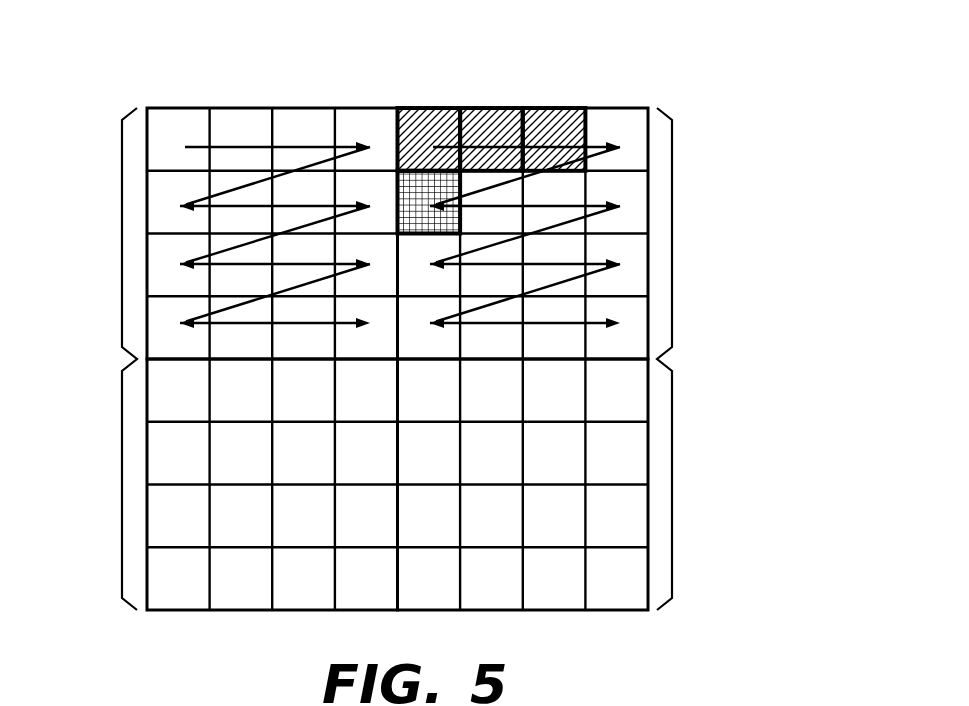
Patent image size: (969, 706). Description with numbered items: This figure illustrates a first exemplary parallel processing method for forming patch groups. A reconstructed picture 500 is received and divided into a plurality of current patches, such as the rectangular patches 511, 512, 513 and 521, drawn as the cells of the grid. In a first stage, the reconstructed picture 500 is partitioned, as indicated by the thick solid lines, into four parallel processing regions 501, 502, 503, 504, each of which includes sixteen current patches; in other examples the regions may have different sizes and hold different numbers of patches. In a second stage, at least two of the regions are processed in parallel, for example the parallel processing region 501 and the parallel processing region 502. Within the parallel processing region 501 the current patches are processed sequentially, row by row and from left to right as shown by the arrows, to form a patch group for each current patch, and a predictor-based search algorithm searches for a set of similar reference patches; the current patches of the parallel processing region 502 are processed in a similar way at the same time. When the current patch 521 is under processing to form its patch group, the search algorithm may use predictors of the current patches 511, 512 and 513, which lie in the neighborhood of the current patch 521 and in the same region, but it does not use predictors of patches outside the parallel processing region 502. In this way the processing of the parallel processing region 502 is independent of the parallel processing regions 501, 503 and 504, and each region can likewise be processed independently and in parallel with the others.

The reconstructed picture 500 is at (766, 74).
The parallel processing region 501 is at (122, 233).
The parallel processing region 502 is at (674, 232).
The parallel processing region 503 is at (122, 486).
The parallel processing region 504 is at (674, 485).
The current patch 511 is at (424, 127).
The current patch 512 is at (499, 127).
The current patch 513 is at (563, 127).
The current patch 521 is at (408, 191).